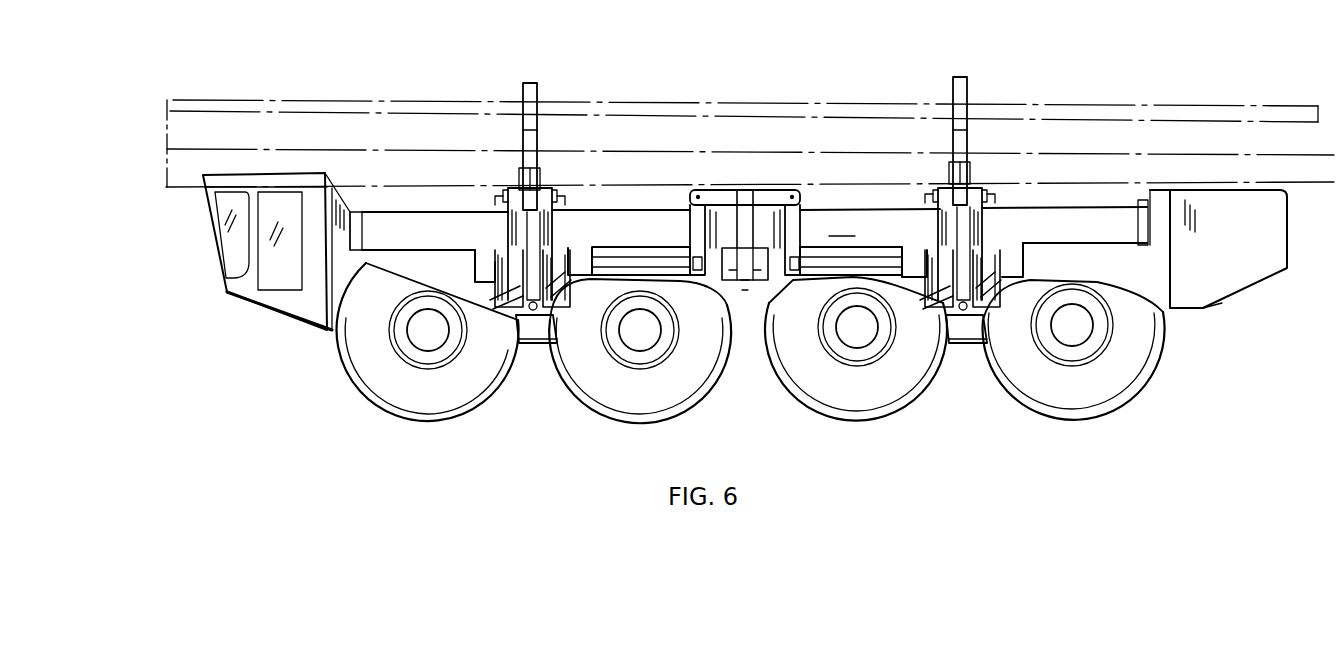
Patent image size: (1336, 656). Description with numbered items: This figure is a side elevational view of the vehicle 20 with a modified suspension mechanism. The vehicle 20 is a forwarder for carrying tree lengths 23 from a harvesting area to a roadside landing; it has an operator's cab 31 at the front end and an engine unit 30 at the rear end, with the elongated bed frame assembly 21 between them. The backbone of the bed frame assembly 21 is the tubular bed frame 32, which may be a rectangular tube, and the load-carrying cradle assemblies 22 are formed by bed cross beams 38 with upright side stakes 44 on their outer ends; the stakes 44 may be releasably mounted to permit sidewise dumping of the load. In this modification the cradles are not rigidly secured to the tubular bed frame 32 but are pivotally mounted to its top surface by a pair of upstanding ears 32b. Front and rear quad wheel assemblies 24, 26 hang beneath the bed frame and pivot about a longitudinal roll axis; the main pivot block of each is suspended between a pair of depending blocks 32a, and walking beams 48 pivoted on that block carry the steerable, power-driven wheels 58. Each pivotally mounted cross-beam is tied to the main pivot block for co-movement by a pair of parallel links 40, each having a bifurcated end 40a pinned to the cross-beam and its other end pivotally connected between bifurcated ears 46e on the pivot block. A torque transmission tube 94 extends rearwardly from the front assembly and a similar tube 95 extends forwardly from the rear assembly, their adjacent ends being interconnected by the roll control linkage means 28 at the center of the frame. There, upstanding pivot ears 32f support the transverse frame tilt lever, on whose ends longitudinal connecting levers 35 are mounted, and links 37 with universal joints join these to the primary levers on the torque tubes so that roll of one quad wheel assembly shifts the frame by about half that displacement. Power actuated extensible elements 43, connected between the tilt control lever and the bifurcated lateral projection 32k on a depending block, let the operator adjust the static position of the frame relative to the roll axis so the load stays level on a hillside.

The vehicle 20 is at (1222, 303).
The bed frame assembly 21 is at (844, 223).
The load-carrying cradle assembly 22 is at (541, 128).
The tree lengths 23 is at (1160, 155).
The front quad wheel assembly 24 is at (538, 352).
The rear quad wheel assembly 26 is at (968, 347).
The roll control linkage means 28 is at (742, 292).
The engine unit 30 is at (1242, 246).
The operator's cab 31 is at (222, 300).
The tubular bed frame 32 is at (1062, 225).
The depending blocks 32a is at (1050, 262).
The upstanding ears 32b is at (512, 192).
The upstanding pivot ears 32f is at (763, 188).
The lateral projection 32k is at (750, 279).
The longitudinal connecting lever 35 is at (718, 192).
The links 37 is at (700, 227).
The bed cross beams 38 is at (1107, 360).
The parallel links 40 is at (530, 220).
The bifurcated end 40a is at (545, 187).
The power actuated extensible elements 43 is at (752, 235).
The upright side stakes 44 is at (536, 83).
The bifurcated ears 46e is at (523, 290).
The walking beam 48 is at (532, 330).
The wheel 58 is at (398, 368).
The torque transmission tube 94 is at (640, 263).
The torque tube 95 is at (865, 263).